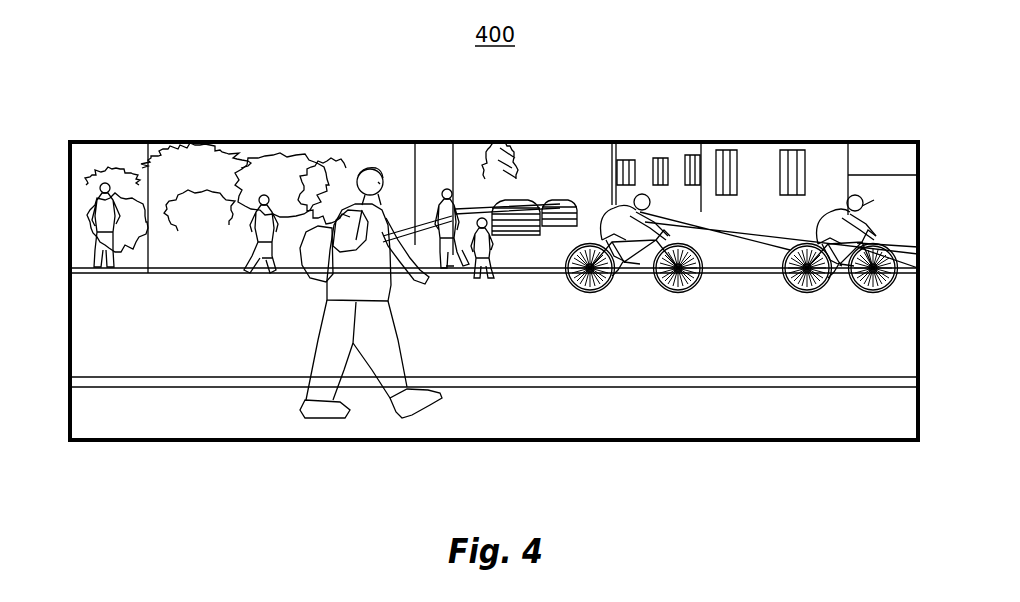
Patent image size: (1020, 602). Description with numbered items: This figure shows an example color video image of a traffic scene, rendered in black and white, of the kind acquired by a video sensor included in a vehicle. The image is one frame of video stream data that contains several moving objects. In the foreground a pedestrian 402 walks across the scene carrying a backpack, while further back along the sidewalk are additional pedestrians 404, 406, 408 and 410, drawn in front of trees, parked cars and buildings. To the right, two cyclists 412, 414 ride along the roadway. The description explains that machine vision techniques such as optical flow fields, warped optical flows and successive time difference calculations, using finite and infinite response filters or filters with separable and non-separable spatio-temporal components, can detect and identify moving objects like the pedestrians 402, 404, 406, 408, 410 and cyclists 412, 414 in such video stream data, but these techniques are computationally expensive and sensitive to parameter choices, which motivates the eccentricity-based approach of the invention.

The pedestrian 402 is at (325, 353).
The pedestrian 404 is at (100, 232).
The pedestrian 406 is at (245, 230).
The pedestrian 408 is at (445, 218).
The pedestrian 410 is at (492, 248).
The cyclist 412 is at (610, 210).
The cyclist 414 is at (815, 212).